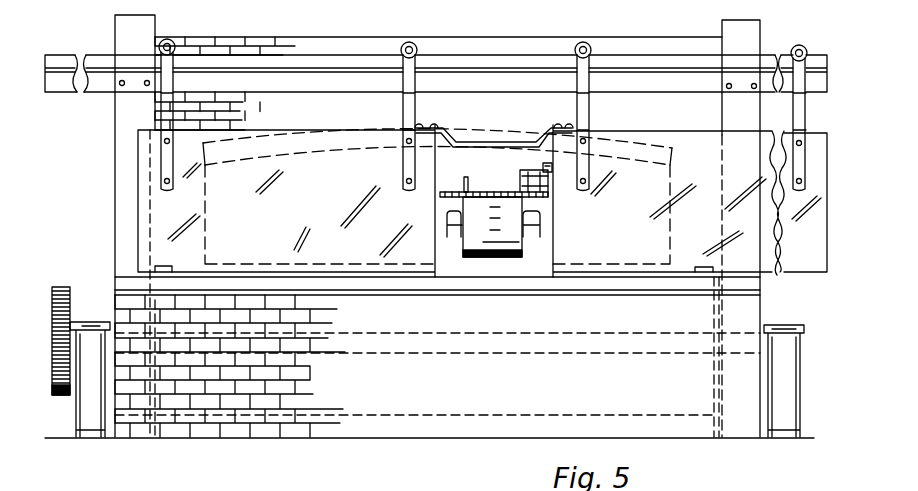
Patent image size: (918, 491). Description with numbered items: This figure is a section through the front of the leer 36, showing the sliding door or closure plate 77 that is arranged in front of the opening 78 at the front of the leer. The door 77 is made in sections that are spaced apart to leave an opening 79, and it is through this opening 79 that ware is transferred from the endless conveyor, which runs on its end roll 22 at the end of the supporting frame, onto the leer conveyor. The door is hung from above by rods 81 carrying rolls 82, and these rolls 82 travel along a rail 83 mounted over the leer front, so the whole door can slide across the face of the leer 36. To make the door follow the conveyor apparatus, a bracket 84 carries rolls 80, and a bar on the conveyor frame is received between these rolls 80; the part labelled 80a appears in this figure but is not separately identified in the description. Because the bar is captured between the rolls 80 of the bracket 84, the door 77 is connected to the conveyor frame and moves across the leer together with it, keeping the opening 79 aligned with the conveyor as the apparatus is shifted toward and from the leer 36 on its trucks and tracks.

The roll 22 is at (466, 235).
The leer 36 is at (115, 236).
The sliding door 77 is at (328, 143).
The opening 78 is at (208, 218).
The opening 79 is at (437, 168).
The rolls 80 is at (544, 180).
The latch bracket 80a is at (506, 183).
The rods 81 is at (414, 82).
The rolls 82 is at (419, 50).
The rail 83 is at (366, 60).
The bracket 84 is at (546, 167).